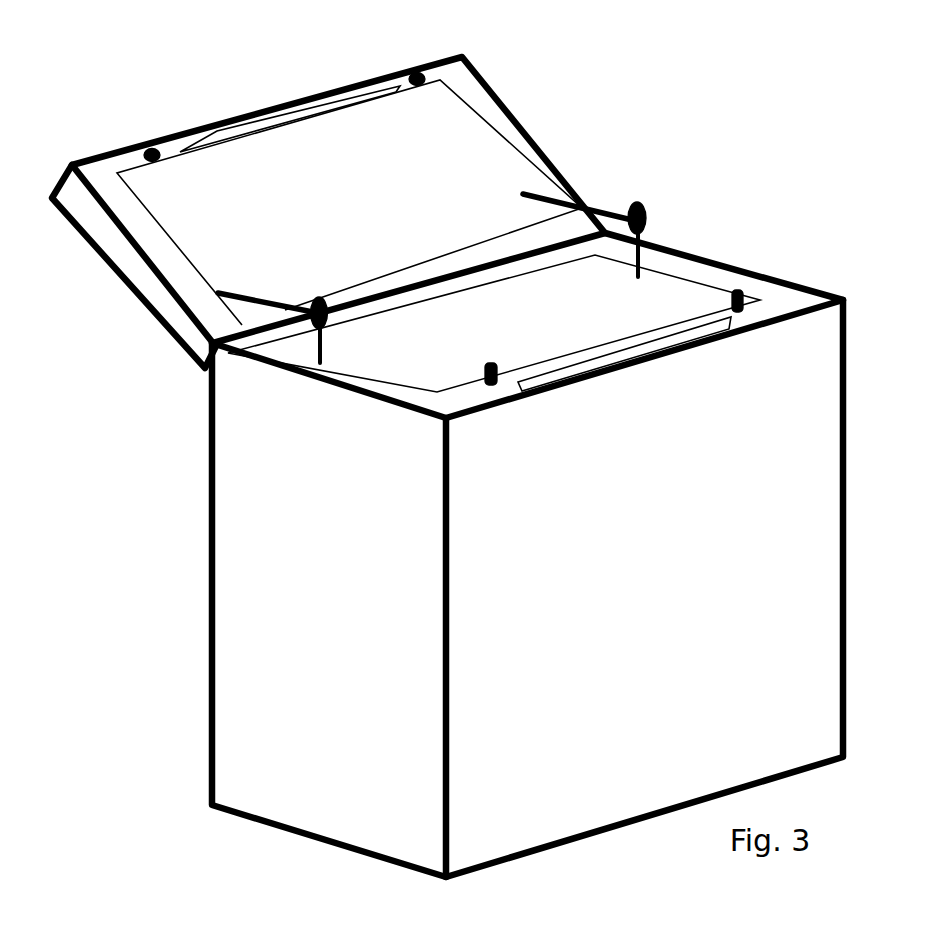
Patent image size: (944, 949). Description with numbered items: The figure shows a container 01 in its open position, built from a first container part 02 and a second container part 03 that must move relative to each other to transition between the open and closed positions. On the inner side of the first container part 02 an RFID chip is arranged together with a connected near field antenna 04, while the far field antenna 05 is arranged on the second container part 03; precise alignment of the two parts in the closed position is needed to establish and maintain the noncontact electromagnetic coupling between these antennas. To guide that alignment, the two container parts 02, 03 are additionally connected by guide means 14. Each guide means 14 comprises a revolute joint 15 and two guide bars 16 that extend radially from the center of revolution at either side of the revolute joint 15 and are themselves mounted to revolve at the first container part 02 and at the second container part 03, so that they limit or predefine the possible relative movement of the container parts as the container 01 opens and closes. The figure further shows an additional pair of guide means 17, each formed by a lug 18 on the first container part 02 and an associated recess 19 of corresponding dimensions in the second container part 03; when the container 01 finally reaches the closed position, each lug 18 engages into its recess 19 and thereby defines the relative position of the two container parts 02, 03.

The container 01 is at (732, 247).
The first container part 02 is at (457, 397).
The second container part 03 is at (517, 143).
The near field antenna 04 is at (577, 375).
The far field antenna 05 is at (260, 117).
The guide means 14 is at (302, 285).
The revolute joint 15 is at (327, 300).
The guide bar 16 is at (630, 260).
The guide means 17 is at (735, 290).
The lug 18 is at (492, 387).
The recess 19 is at (150, 147).